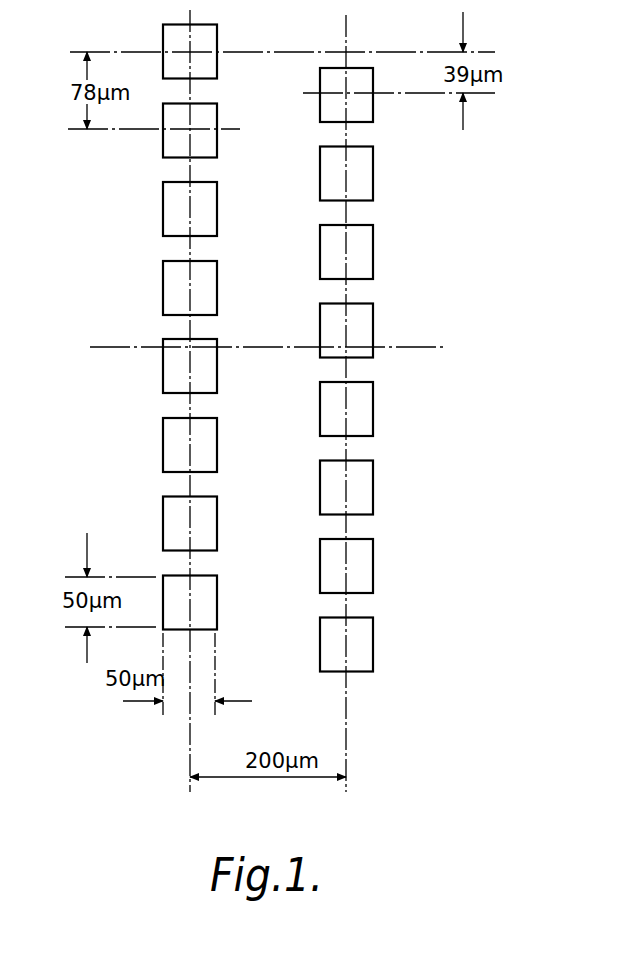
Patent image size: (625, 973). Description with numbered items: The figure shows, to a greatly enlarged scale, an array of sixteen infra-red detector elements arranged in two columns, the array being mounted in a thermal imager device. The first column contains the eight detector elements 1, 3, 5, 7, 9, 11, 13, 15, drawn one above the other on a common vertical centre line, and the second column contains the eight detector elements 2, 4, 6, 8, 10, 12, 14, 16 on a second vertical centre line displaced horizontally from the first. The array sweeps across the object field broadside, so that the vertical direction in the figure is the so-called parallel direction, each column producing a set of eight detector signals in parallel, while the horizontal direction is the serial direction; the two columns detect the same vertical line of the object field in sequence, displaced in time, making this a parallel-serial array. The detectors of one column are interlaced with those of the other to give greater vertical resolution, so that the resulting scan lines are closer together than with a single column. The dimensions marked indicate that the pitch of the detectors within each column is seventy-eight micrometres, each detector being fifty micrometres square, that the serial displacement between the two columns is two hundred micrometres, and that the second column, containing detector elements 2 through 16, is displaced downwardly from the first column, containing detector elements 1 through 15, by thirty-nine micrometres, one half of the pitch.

The detector element 1 is at (178, 49).
The detector element 2 is at (357, 93).
The detector element 3 is at (178, 130).
The detector element 4 is at (357, 173).
The detector element 5 is at (178, 209).
The detector element 6 is at (357, 252).
The detector element 7 is at (178, 288).
The detector element 8 is at (357, 329).
The detector element 9 is at (178, 366).
The detector element 10 is at (364, 407).
The detector element 11 is at (171, 442).
The detector element 12 is at (364, 487).
The detector element 13 is at (171, 521).
The detector element 14 is at (364, 566).
The detector element 15 is at (171, 603).
The detector element 16 is at (364, 644).